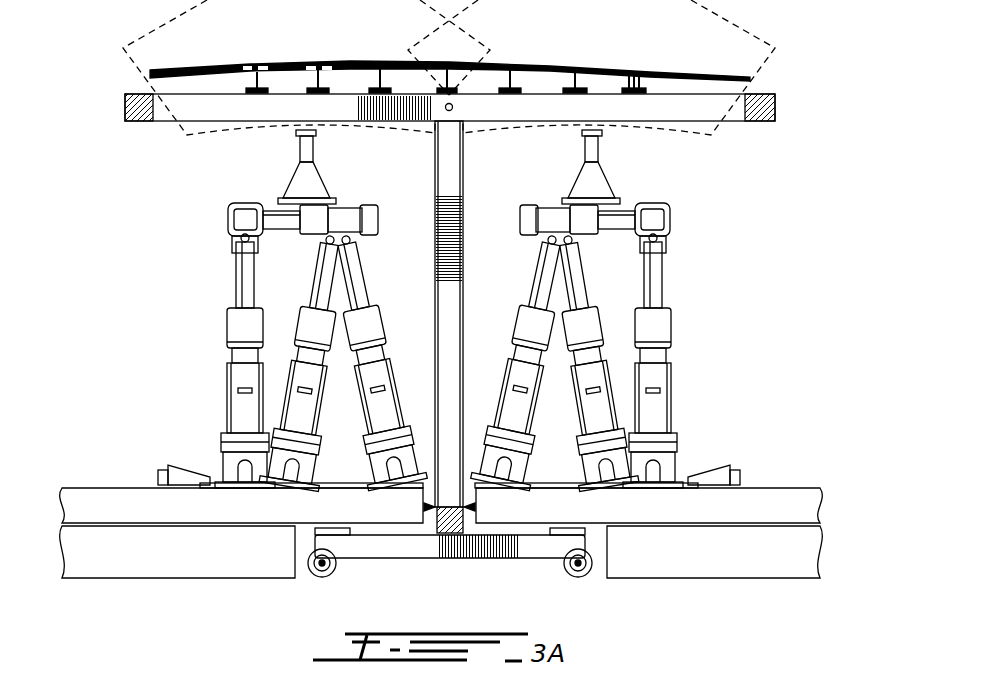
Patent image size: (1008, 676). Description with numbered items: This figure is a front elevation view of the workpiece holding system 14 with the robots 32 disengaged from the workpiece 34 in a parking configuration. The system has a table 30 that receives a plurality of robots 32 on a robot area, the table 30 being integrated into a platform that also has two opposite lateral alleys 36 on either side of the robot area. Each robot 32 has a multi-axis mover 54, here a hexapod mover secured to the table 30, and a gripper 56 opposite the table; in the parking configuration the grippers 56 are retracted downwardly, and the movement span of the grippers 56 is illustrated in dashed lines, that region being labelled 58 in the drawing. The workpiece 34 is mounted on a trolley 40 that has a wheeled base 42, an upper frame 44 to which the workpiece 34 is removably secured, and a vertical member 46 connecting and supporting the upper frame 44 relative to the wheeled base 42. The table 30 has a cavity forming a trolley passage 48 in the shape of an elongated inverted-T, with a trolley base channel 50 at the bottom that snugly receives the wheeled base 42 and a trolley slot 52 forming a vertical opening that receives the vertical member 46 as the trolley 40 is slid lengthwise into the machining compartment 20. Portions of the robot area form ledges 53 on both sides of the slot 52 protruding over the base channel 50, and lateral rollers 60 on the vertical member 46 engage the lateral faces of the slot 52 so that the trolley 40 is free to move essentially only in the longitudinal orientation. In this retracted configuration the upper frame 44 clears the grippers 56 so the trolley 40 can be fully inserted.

The workpiece holding system 14 is at (798, 230).
The machining compartment 20 is at (392, 176).
The table 30 is at (91, 492).
The robots 32 is at (228, 218).
The workpiece 34 is at (509, 72).
The lateral alleys 36 is at (128, 487).
The trolley 40 is at (400, 550).
The wheeled base 42 is at (483, 563).
The upper frame 44 is at (557, 107).
The vertical member 46 is at (452, 200).
The trolley passage 48 is at (280, 553).
The trolley base channel 50 is at (543, 567).
The trolley slot 52 is at (468, 503).
The ledges 53 is at (393, 505).
The multi-axis mover 54 is at (237, 327).
The gripper 56 is at (593, 133).
The range of motion outline 58 is at (768, 62).
The lateral rollers 60 is at (432, 503).